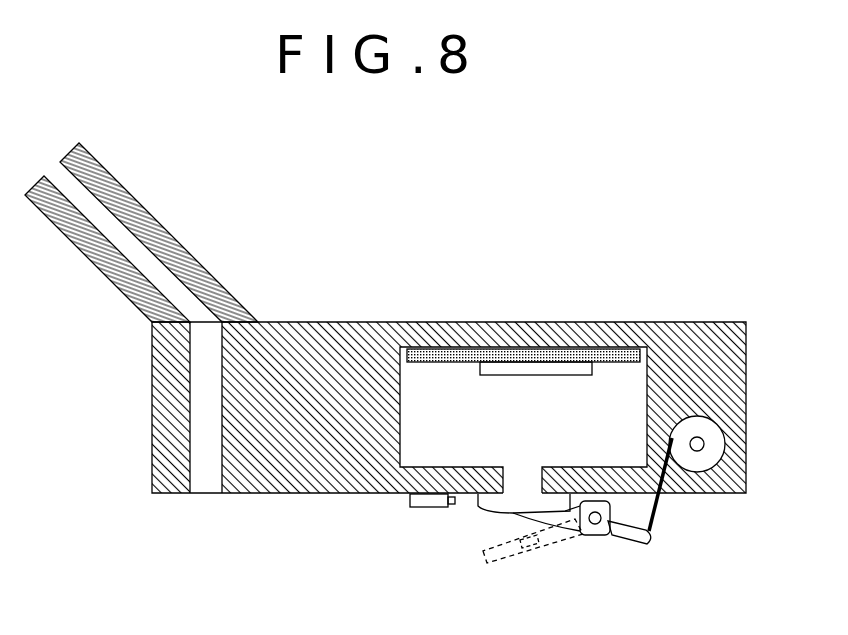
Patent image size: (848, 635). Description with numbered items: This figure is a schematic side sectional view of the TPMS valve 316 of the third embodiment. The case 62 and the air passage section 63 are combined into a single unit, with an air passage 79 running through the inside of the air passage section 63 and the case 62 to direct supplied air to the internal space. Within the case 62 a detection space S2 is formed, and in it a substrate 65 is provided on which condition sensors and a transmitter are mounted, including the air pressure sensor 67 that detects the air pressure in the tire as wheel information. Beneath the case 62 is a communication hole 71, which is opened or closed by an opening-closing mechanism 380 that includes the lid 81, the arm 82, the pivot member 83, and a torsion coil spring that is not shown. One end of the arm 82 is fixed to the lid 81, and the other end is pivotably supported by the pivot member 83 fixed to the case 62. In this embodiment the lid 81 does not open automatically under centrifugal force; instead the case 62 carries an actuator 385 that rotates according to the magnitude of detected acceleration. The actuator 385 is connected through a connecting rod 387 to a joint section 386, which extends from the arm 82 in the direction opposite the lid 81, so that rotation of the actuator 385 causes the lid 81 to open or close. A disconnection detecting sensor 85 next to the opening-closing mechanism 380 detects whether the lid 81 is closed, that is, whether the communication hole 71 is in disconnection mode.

The TPMS valve 316 is at (630, 225).
The case 62 is at (703, 322).
The air passage section 63 is at (119, 182).
The air passage 79 is at (113, 263).
The communication hole 71 is at (485, 507).
The substrate 65 is at (543, 353).
The air pressure sensor 67 is at (500, 367).
The detection space S2 is at (635, 382).
The actuator 385 is at (715, 457).
The disconnection detecting sensor 85 is at (415, 508).
The lid 81 is at (498, 517).
The arm 82 is at (570, 531).
The pivot member 83 is at (613, 501).
The joint section 386 is at (622, 531).
The connecting rod 387 is at (667, 522).
The opening-closing mechanism 380 is at (468, 547).